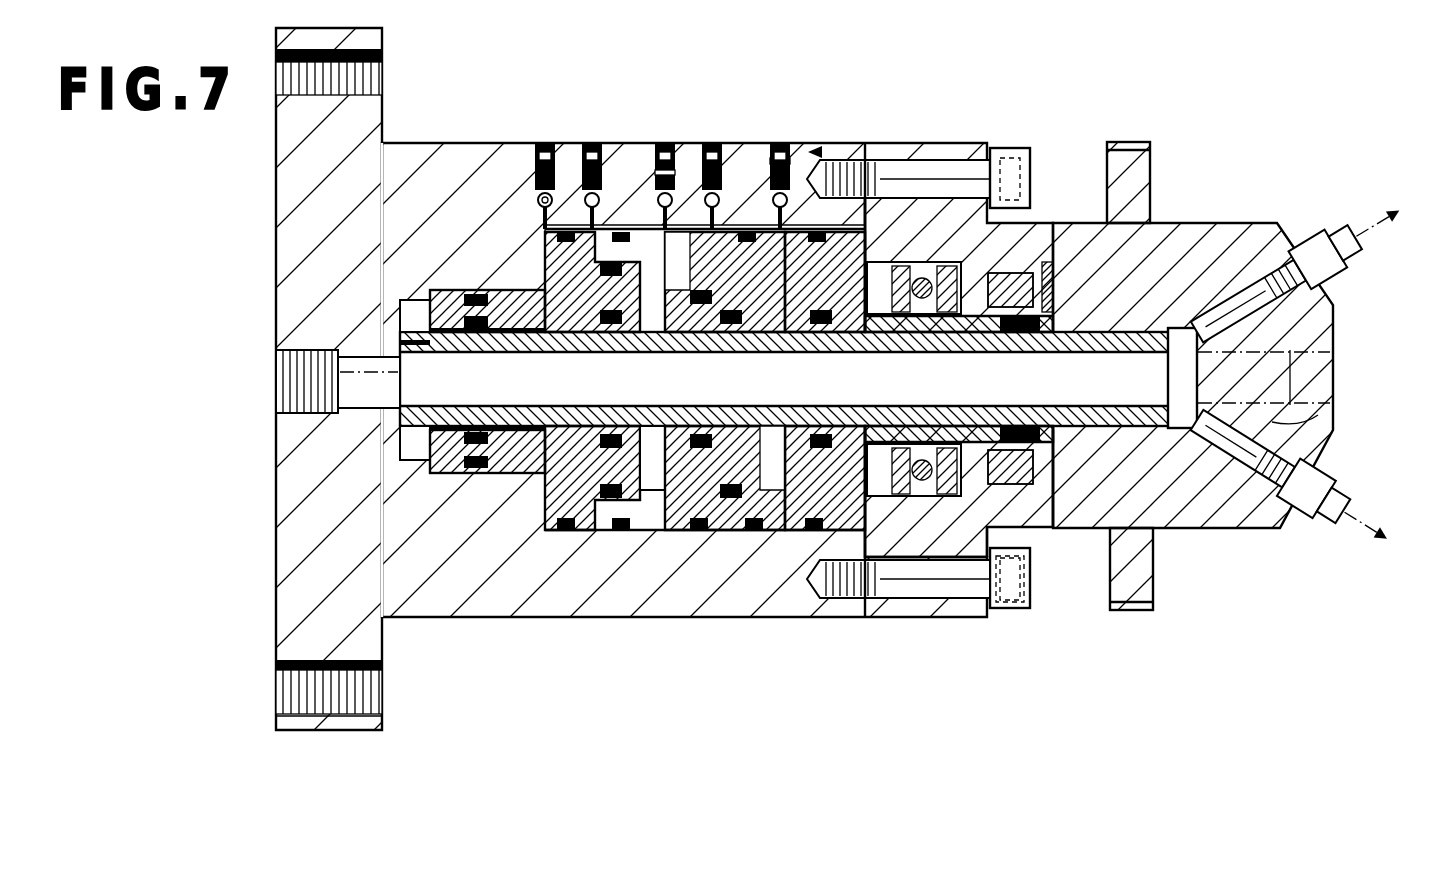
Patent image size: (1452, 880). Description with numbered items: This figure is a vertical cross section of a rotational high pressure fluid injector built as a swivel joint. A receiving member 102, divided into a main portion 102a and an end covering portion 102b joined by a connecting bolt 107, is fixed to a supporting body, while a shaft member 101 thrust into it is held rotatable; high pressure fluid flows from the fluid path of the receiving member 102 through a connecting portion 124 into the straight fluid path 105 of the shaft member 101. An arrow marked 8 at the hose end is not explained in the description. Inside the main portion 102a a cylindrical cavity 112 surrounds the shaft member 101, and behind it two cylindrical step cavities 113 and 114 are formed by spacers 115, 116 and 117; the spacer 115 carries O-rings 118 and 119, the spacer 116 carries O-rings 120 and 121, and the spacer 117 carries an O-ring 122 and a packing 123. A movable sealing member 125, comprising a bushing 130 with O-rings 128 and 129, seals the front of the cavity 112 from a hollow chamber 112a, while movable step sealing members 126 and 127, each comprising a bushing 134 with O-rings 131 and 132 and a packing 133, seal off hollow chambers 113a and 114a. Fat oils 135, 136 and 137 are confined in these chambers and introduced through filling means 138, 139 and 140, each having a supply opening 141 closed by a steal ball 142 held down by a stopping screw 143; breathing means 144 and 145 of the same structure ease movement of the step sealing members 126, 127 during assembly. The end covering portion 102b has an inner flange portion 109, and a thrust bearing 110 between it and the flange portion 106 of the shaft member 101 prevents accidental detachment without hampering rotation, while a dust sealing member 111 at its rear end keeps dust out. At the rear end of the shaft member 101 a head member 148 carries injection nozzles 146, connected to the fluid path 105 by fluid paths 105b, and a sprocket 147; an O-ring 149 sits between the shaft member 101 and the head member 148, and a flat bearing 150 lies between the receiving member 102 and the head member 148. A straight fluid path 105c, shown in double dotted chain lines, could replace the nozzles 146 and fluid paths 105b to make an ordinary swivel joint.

The drive shaft 8 is at (276, 378).
The shaft member 101 is at (1100, 328).
The receiving member 102 is at (278, 166).
The main portion 102a is at (322, 214).
The end covering portion 102b is at (1030, 162).
The fluid path 105 is at (1300, 360).
The fluid paths 105b is at (1292, 292).
The straight fluid path 105c is at (1292, 420).
The flange portion 106 is at (985, 172).
The connecting bolt 107 is at (1032, 152).
The inner flange portion 109 is at (1200, 365).
The thrust bearing 110 is at (1100, 352).
The dust sealing member 111 is at (958, 298).
The cylindrical cavity 112 is at (546, 326).
The hollow chamber 112a is at (530, 470).
The cylindrical step cavity 113 is at (632, 328).
The hollow chamber 113a is at (662, 522).
The cylindrical step cavity 114 is at (850, 300).
The hollow chamber 114a is at (870, 500).
The spacer 115 is at (603, 532).
The spacer 116 is at (866, 560).
The spacer 117 is at (1025, 605).
The O-ring 118 is at (555, 532).
The O-ring 119 is at (642, 522).
The O-ring 120 is at (782, 500).
The O-ring 121 is at (900, 540).
The O-ring 122 is at (1000, 600).
The packing 123 is at (1060, 334).
The connecting portion 124 is at (410, 306).
The movable sealing member 125 is at (440, 297).
The movable step sealing member 126 is at (752, 292).
The movable step sealing member 127 is at (952, 326).
The O-ring 128 is at (490, 330).
The O-ring 129 is at (476, 294).
The bushing 130 is at (442, 352).
The O-ring 131 is at (588, 330).
The O-ring 132 is at (670, 150).
The packing 133 is at (692, 300).
The bushing 134 is at (800, 312).
The fat oil 135 is at (525, 490).
The fat oil 136 is at (730, 470).
The fat oil 137 is at (1060, 600).
The filling means 138 is at (596, 109).
The filling means 139 is at (715, 146).
The filling means 140 is at (822, 152).
The supply opening 141 is at (535, 212).
The steal ball 142 is at (538, 228).
The stopping screw 143 is at (540, 150).
The breathing means 144 is at (655, 109).
The breathing means 145 is at (783, 146).
The injection nozzles 146 is at (1318, 232).
The sprocket 147 is at (1130, 215).
The head member 148 is at (1238, 262).
The O-ring 149 is at (1148, 320).
The flat bearing 150 is at (1058, 470).